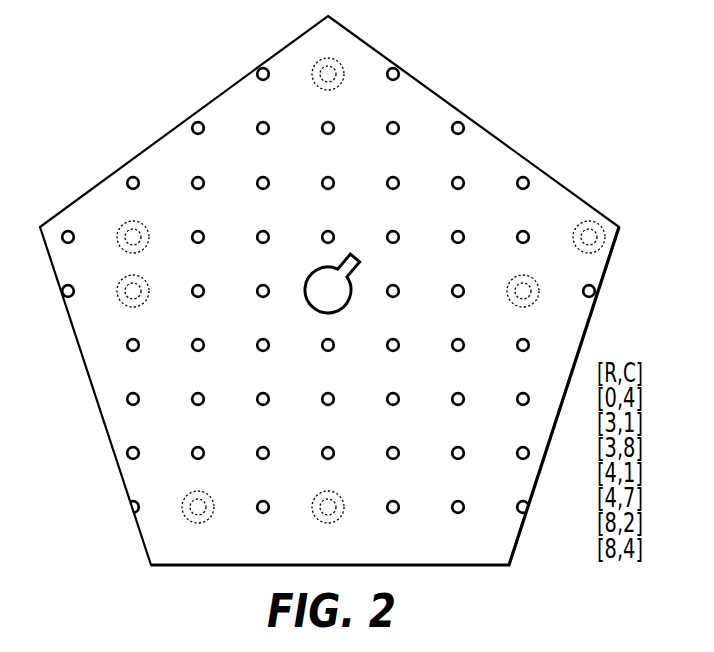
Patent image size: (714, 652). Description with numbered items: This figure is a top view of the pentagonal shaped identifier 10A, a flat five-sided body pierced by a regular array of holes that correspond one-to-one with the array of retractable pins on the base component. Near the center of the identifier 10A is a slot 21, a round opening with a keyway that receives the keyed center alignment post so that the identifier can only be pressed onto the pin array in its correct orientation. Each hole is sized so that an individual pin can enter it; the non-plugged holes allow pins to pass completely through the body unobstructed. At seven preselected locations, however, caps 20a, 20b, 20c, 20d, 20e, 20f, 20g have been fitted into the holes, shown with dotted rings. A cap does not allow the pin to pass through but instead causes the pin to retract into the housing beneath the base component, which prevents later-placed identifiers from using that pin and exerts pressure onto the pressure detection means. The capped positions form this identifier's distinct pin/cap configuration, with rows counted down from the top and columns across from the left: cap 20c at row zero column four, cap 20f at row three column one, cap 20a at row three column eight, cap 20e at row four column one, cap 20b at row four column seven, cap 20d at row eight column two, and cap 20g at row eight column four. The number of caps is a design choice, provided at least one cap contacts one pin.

The pentagonal shaped identifier 10A is at (496, 137).
The cap 20a is at (592, 222).
The cap 20b is at (525, 306).
The cap 20c is at (344, 507).
The cap 20d is at (182, 503).
The cap 20e is at (133, 307).
The cap 20f is at (117, 236).
The cap 20g is at (332, 58).
The slot 21 is at (330, 300).